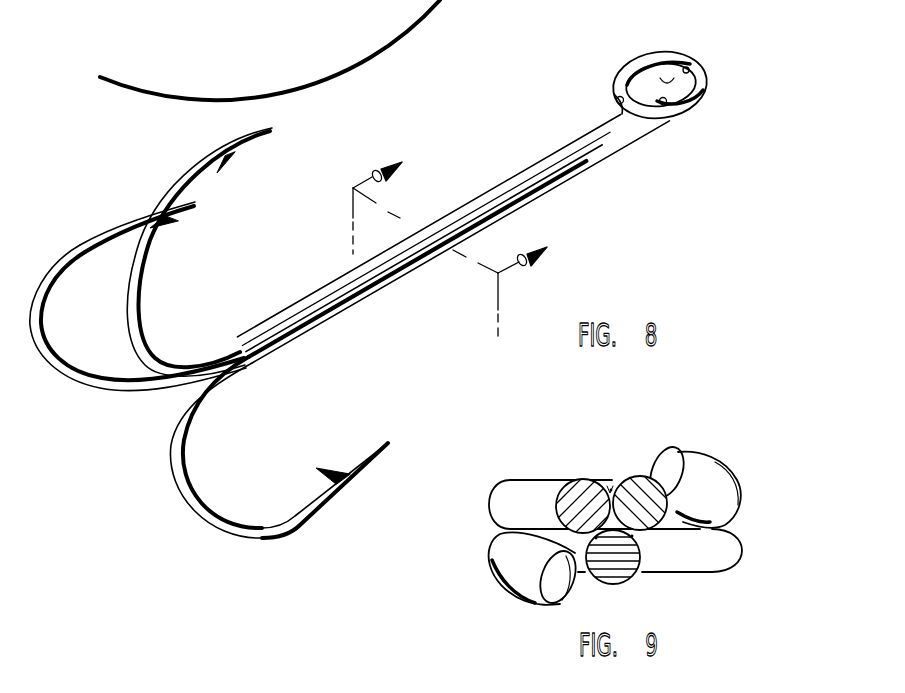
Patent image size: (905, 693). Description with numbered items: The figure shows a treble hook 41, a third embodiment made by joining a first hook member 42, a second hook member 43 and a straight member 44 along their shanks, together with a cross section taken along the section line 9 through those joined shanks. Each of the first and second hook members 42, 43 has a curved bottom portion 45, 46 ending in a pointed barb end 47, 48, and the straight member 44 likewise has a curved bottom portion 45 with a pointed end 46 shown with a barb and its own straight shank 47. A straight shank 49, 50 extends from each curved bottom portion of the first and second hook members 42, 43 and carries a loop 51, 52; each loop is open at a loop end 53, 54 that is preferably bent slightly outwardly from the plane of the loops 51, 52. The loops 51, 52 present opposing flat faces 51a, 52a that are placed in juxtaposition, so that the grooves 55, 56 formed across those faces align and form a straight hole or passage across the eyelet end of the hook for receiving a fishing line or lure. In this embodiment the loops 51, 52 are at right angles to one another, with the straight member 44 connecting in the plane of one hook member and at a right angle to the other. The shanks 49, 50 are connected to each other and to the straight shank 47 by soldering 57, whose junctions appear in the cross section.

In FIG. 8, the section line 9— 9 is at (440, 251).
In FIG. 8, the treble hook 41 is at (215, 478).
In FIG. 9, the treble hook 41 is at (754, 478).
In FIG. 8, the first hook member 42 is at (179, 328).
In FIG. 8, the second hook member 43 is at (85, 410).
In FIG. 8, the straight member 44 is at (614, 226).
In FIG. 8, the curved bottom portion 45 is at (127, 283).
In FIG. 8, the pointed end 46 is at (67, 370).
In FIG. 8, the straight shank 47 is at (298, 334).
In FIG. 9, the straight shank 47 is at (577, 493).
In FIG. 8, the pointed barb end 48 is at (168, 220).
In FIG. 8, the straight shank 49 is at (502, 185).
In FIG. 9, the straight shank 49 is at (636, 487).
In FIG. 8, the straight shank 50 is at (197, 375).
In FIG. 9, the straight shank 50 is at (624, 564).
In FIG. 8, the loop 51 is at (704, 98).
In FIG. 9, the loop 51 is at (507, 502).
In FIG. 9, the opposing flat face 51a is at (500, 532).
In FIG. 8, the loop 52 is at (672, 121).
In FIG. 9, the loop 52 is at (728, 552).
In FIG. 9, the opposing flat face 52a is at (743, 518).
In FIG. 8, the loop end 53 is at (663, 105).
In FIG. 9, the loop end 53 is at (668, 457).
In FIG. 8, the loop end 54 is at (616, 100).
In FIG. 9, the loop end 54 is at (553, 603).
In FIG. 8, the groove 55 is at (689, 66).
In FIG. 8, the groove 56 is at (662, 78).
In FIG. 8, the soldering 57 is at (358, 275).
In FIG. 9, the soldering 57 is at (608, 495).